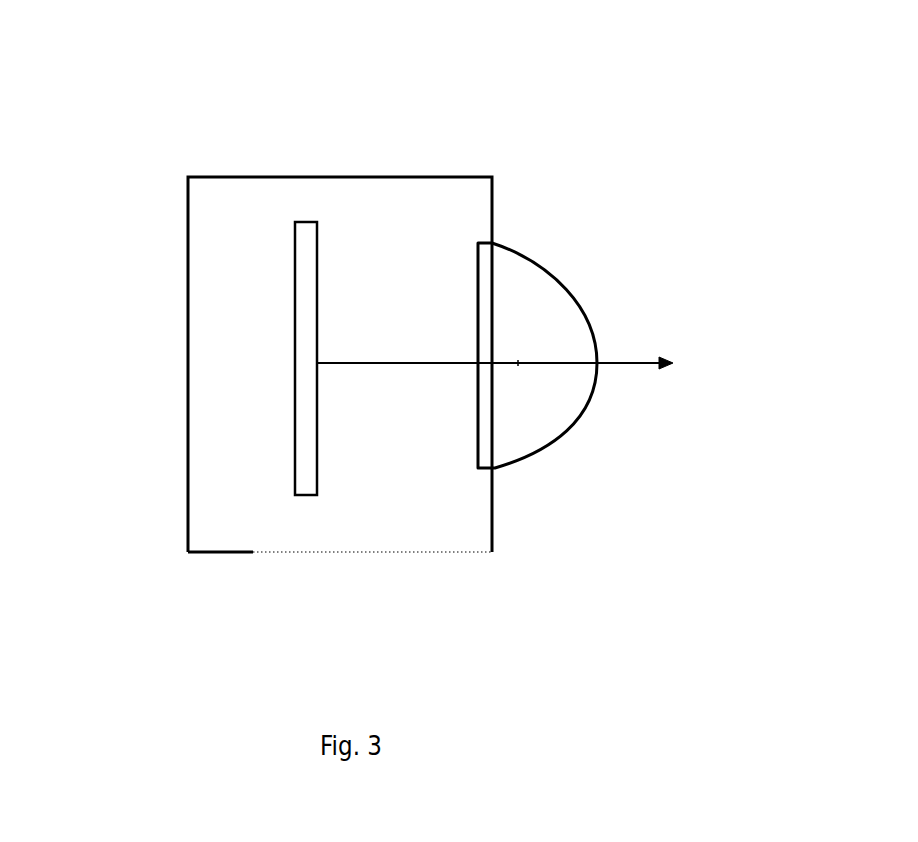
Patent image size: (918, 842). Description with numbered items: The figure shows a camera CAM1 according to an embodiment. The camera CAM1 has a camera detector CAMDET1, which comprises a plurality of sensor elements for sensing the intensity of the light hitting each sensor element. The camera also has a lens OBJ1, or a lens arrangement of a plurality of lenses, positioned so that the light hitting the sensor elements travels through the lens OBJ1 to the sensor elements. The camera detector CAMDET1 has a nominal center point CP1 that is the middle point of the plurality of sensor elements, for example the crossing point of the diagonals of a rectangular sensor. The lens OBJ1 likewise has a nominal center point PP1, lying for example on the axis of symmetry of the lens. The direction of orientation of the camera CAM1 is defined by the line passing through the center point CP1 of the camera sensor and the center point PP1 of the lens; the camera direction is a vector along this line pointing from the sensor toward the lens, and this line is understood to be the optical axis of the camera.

The camera CAM1 is at (270, 72).
The camera detector CAMDET1 is at (306, 221).
The nominal center point of the camera detector CP1 is at (317, 362).
The nominal center point of the lens PP1 is at (518, 363).
The lens OBJ1 is at (500, 470).